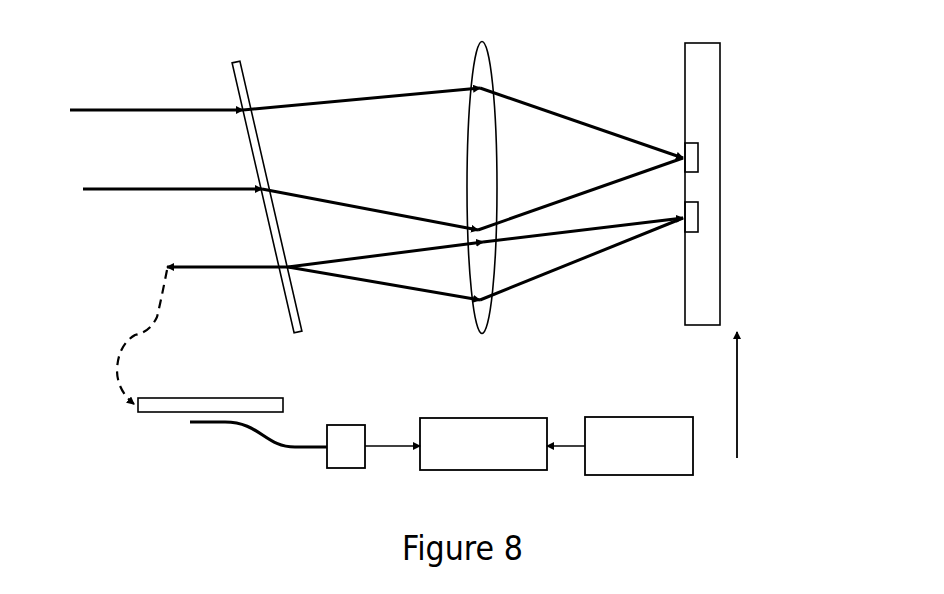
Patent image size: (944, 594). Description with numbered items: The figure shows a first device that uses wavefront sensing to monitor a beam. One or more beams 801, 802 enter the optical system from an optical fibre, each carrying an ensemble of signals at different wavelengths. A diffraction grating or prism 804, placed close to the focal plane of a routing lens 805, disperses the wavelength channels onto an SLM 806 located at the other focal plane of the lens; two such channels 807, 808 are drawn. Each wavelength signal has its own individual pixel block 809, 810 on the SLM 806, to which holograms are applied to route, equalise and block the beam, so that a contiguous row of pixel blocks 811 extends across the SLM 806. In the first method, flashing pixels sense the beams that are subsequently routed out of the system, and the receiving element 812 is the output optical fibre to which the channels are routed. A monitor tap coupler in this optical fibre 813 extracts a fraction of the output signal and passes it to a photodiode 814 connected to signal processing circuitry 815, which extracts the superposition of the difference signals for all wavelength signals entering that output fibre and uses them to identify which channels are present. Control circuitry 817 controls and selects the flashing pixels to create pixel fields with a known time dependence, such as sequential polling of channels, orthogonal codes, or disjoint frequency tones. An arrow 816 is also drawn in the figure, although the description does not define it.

The beam 801 is at (140, 100).
The beam 802 is at (140, 182).
The diffraction grating or prism 804 is at (245, 78).
The routing lens 805 is at (485, 63).
The SLM 806 is at (707, 115).
The channel 807 is at (400, 88).
The channel 808 is at (360, 205).
The pixel block 809 is at (698, 157).
The pixel block 810 is at (698, 217).
The row of pixel blocks 811 is at (227, 265).
The receiving element 812 is at (203, 393).
The optical fibre with monitor tap coupler 813 is at (258, 435).
The photodiode 814 is at (340, 423).
The signal processing circuitry 815 is at (457, 413).
The direction of movement arrow 816 is at (764, 395).
The control circuitry 817 is at (608, 413).